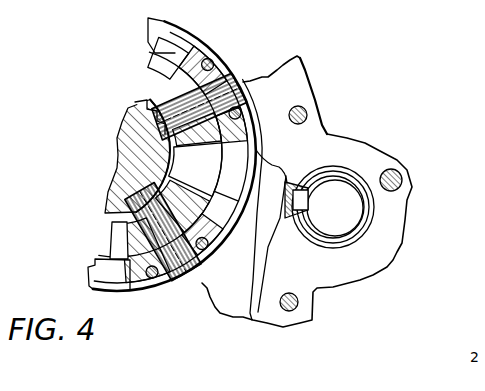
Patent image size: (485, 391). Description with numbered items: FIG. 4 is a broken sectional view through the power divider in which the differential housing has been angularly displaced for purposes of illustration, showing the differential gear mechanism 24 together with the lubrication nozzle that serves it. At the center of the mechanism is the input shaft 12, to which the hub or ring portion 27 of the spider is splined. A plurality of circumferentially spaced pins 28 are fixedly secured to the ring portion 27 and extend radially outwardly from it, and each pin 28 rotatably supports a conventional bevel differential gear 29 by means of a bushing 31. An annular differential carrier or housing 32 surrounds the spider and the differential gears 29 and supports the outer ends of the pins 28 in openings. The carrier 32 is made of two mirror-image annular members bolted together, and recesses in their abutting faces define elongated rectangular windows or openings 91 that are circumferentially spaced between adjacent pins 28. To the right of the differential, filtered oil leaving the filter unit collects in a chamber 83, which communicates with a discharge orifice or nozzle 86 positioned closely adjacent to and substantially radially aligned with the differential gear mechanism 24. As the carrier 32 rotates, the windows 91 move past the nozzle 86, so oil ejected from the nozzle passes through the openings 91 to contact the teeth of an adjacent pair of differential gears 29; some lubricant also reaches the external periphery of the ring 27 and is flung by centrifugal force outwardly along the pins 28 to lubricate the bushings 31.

The differential gear mechanism 24 is at (118, 45).
The bushing 31 is at (160, 81).
The input shaft 12 is at (117, 142).
The hub or ring portion 27 is at (100, 213).
The bevel differential gear 29 is at (213, 146).
The pins 28 is at (238, 80).
The windows or openings 91 is at (210, 250).
The differential carrier or housing 32 is at (198, 257).
The chamber 83 is at (340, 190).
The discharge orifice or nozzle 86 is at (305, 203).